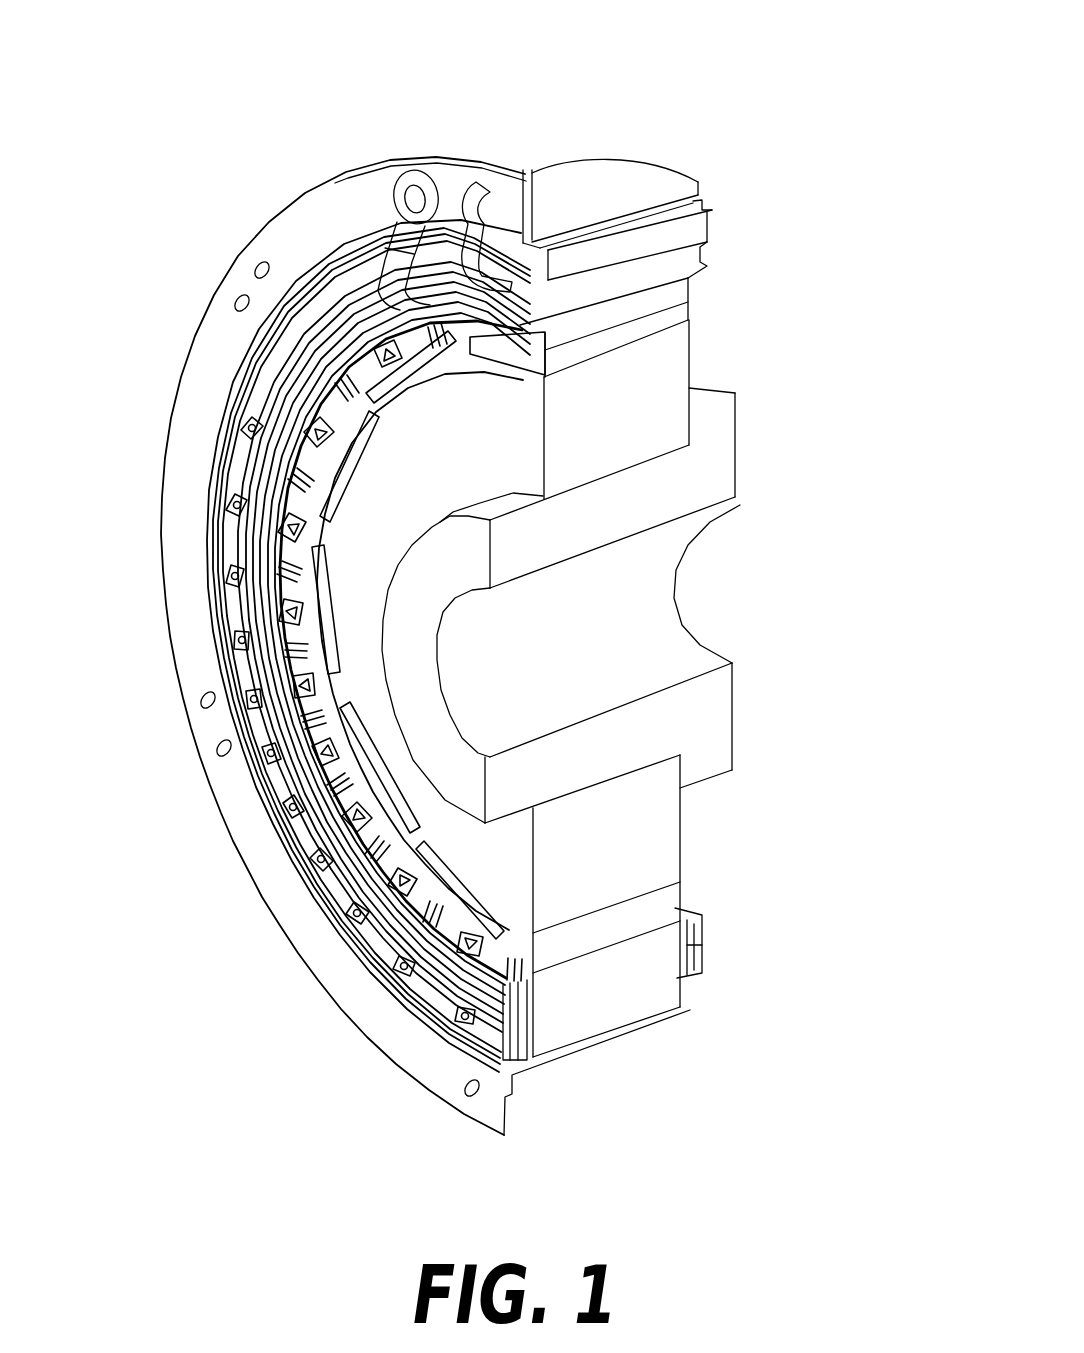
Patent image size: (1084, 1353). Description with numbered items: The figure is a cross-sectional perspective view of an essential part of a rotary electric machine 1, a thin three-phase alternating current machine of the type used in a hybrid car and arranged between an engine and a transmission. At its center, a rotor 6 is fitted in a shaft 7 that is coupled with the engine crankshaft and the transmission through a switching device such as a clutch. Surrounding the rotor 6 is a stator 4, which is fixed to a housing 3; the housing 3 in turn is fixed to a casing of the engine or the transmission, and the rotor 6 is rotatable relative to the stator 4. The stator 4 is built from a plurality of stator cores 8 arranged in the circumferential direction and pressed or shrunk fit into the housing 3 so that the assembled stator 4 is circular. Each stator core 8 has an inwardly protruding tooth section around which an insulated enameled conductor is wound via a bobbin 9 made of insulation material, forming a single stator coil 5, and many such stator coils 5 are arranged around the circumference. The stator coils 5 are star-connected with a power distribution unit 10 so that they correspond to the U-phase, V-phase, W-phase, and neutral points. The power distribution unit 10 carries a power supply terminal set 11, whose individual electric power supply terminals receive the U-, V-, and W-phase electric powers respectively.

The rotary electric machine 1 is at (157, 394).
The housing 3 is at (618, 183).
The stator 4 is at (732, 194).
The stator coil 5 is at (690, 244).
The rotor 6 is at (660, 377).
The shaft 7 is at (712, 426).
The stator core 8 is at (624, 997).
The bobbin 9 is at (700, 908).
The power distribution unit 10 is at (306, 885).
The power supply terminal set 11 is at (398, 192).